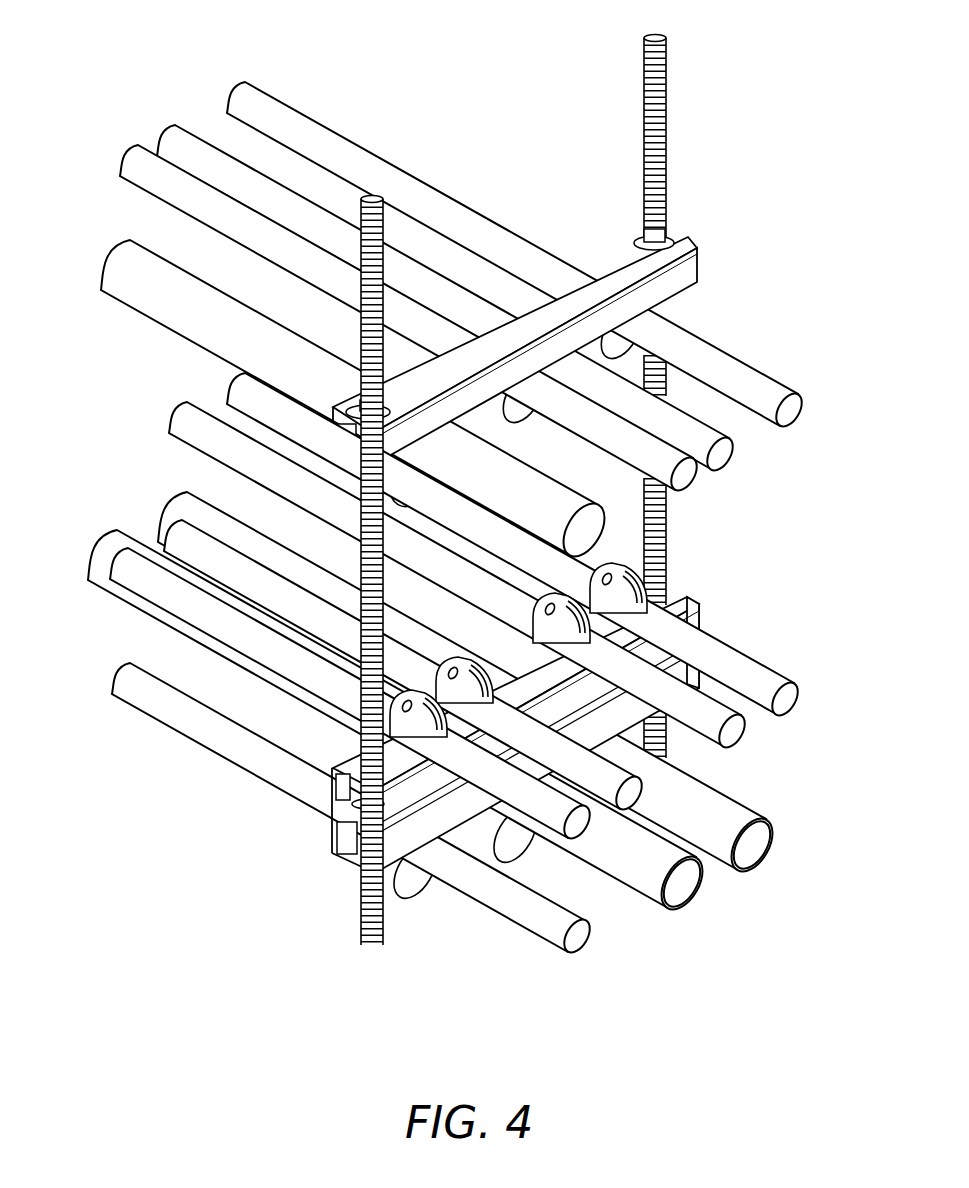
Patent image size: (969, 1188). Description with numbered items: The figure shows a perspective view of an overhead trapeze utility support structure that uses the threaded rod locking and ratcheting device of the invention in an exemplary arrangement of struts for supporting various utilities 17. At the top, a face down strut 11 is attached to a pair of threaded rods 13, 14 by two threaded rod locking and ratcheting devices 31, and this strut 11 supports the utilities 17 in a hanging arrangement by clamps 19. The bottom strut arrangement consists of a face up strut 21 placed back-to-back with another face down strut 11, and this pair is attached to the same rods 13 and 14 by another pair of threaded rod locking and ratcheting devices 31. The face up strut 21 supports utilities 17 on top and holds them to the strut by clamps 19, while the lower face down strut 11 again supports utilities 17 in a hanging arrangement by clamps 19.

The face down strut 11 is at (698, 267).
The threaded rod 13 is at (668, 170).
The threaded rod 14 is at (386, 222).
The utilities 17 is at (464, 543).
The clamp 19 is at (464, 543).
The face up strut 21 is at (327, 800).
The threaded rod locking and ratcheting device 31 is at (681, 230).